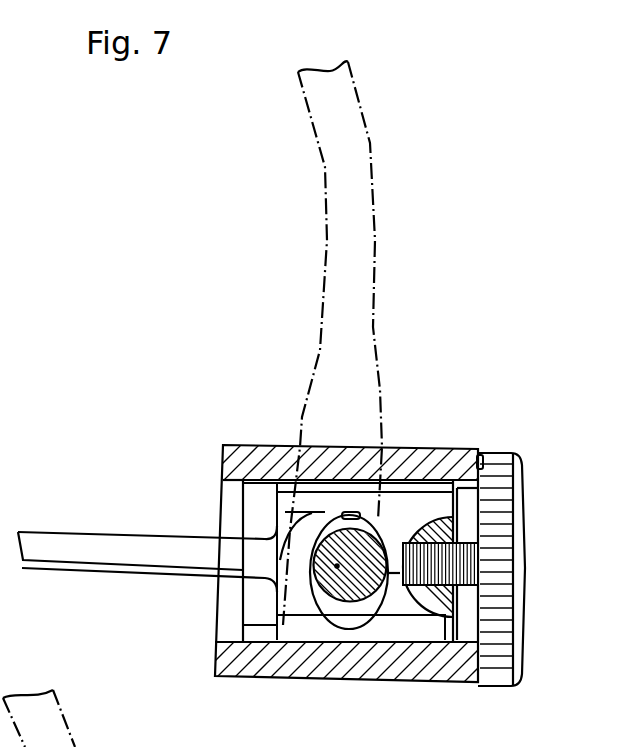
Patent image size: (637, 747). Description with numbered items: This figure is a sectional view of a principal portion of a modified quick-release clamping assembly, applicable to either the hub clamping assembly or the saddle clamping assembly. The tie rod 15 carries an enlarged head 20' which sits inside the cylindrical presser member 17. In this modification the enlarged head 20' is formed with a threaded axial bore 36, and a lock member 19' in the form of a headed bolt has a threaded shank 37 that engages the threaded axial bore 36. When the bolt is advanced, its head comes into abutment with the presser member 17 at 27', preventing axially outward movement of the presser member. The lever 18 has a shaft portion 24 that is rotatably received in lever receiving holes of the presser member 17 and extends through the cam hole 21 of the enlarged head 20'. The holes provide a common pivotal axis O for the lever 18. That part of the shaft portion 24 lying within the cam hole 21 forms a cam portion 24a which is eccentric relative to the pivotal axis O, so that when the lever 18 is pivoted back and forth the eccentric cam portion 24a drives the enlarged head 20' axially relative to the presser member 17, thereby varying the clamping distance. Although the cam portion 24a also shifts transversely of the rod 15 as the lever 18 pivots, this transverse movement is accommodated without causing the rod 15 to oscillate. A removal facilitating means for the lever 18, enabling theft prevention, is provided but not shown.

The tie rod 15 is at (107, 532).
The presser member 17 is at (445, 450).
The lever 18 is at (374, 322).
The lock member 19' is at (531, 569).
The enlarged head 20' is at (361, 613).
The cam hole 21 is at (372, 512).
The shaft portion 24 is at (303, 500).
The cam portion 24a is at (359, 578).
The abutment 27' is at (510, 431).
The threaded axial bore 36 is at (468, 563).
The threaded shank 37 is at (445, 549).
The pivotal axis O is at (337, 570).